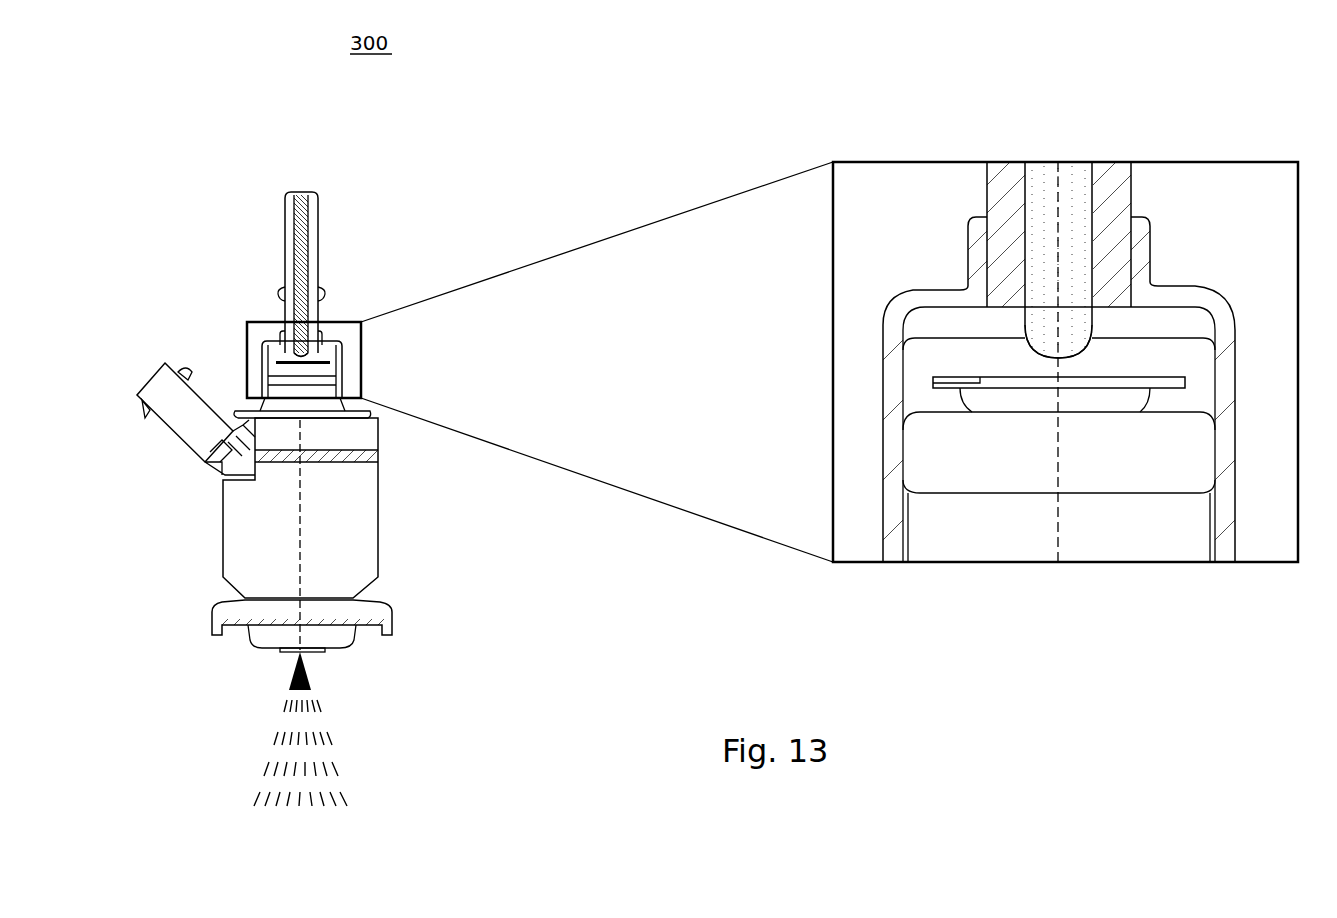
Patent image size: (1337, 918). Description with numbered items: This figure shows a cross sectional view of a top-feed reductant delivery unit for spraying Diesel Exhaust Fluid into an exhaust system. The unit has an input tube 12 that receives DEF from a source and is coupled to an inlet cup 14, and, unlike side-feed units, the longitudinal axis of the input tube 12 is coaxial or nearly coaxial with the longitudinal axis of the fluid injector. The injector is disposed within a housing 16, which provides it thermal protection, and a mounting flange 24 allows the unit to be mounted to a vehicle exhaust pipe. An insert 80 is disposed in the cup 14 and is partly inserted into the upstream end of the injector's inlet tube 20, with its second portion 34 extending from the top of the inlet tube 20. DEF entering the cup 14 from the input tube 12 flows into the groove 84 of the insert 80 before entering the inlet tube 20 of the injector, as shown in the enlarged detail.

The input tube 12 is at (325, 238).
The inlet cup 14 is at (356, 364).
The housing 16 is at (230, 552).
The inlet tube 20 is at (948, 387).
The mounting flange 24 is at (378, 612).
The second portion 34 is at (956, 320).
The insert 80 is at (284, 356).
The groove 84 is at (300, 353).